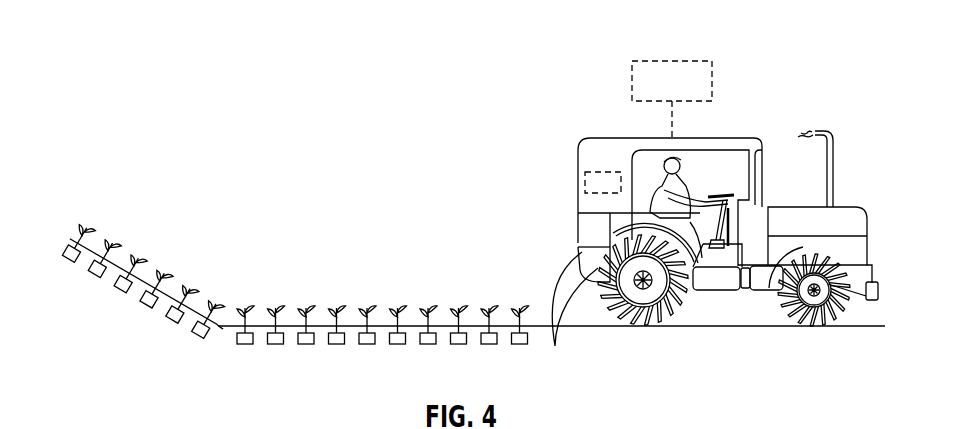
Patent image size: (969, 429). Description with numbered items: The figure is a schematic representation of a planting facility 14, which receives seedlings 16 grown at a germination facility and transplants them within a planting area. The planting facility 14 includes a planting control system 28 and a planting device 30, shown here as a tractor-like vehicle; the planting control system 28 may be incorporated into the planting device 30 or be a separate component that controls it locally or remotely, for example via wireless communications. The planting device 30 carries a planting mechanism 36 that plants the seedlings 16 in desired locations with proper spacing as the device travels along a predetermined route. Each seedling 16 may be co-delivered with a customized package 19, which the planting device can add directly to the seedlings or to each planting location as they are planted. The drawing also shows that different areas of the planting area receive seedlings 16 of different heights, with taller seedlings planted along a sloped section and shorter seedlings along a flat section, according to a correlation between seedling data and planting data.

The planting facility 14 is at (262, 52).
The seedlings 16 is at (93, 233).
The customized package 19 is at (367, 345).
The planting control system 28 is at (632, 80).
The planting device 30 is at (848, 207).
The planting mechanism 36 is at (567, 280).